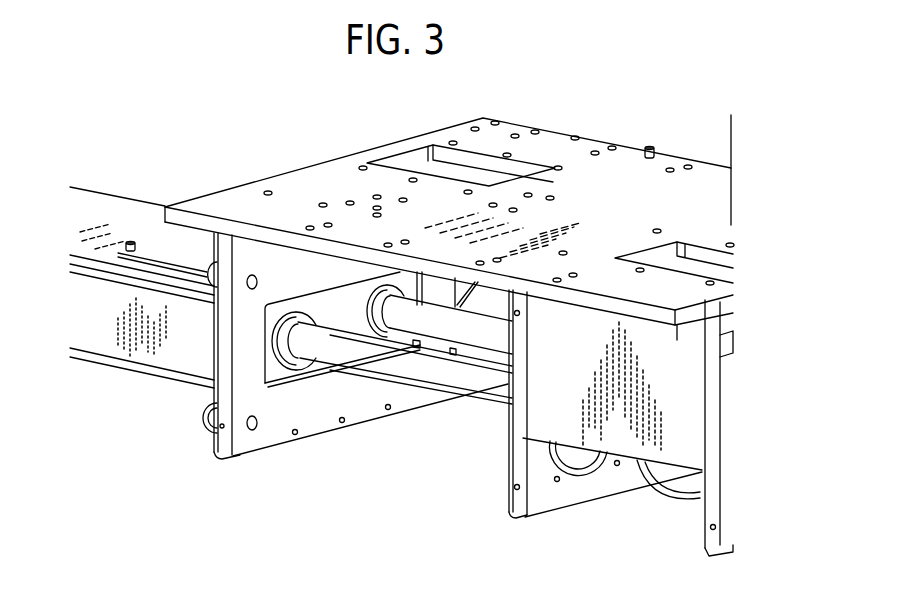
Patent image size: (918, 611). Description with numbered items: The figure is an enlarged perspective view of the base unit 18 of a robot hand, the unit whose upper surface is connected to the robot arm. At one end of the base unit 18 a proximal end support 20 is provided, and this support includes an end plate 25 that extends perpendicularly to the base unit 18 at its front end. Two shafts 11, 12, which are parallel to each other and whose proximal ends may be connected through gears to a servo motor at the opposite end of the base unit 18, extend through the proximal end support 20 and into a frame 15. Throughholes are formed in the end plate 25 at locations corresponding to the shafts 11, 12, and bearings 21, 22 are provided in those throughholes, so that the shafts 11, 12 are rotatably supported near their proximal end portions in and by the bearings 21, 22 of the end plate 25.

The shaft 11 is at (433, 376).
The shaft 12 is at (496, 338).
The frame 15 is at (106, 218).
The base unit 18 is at (620, 178).
The proximal end support 20 is at (200, 461).
The bearing 21 is at (293, 368).
The bearing 22 is at (360, 320).
The end plate 25 is at (257, 440).